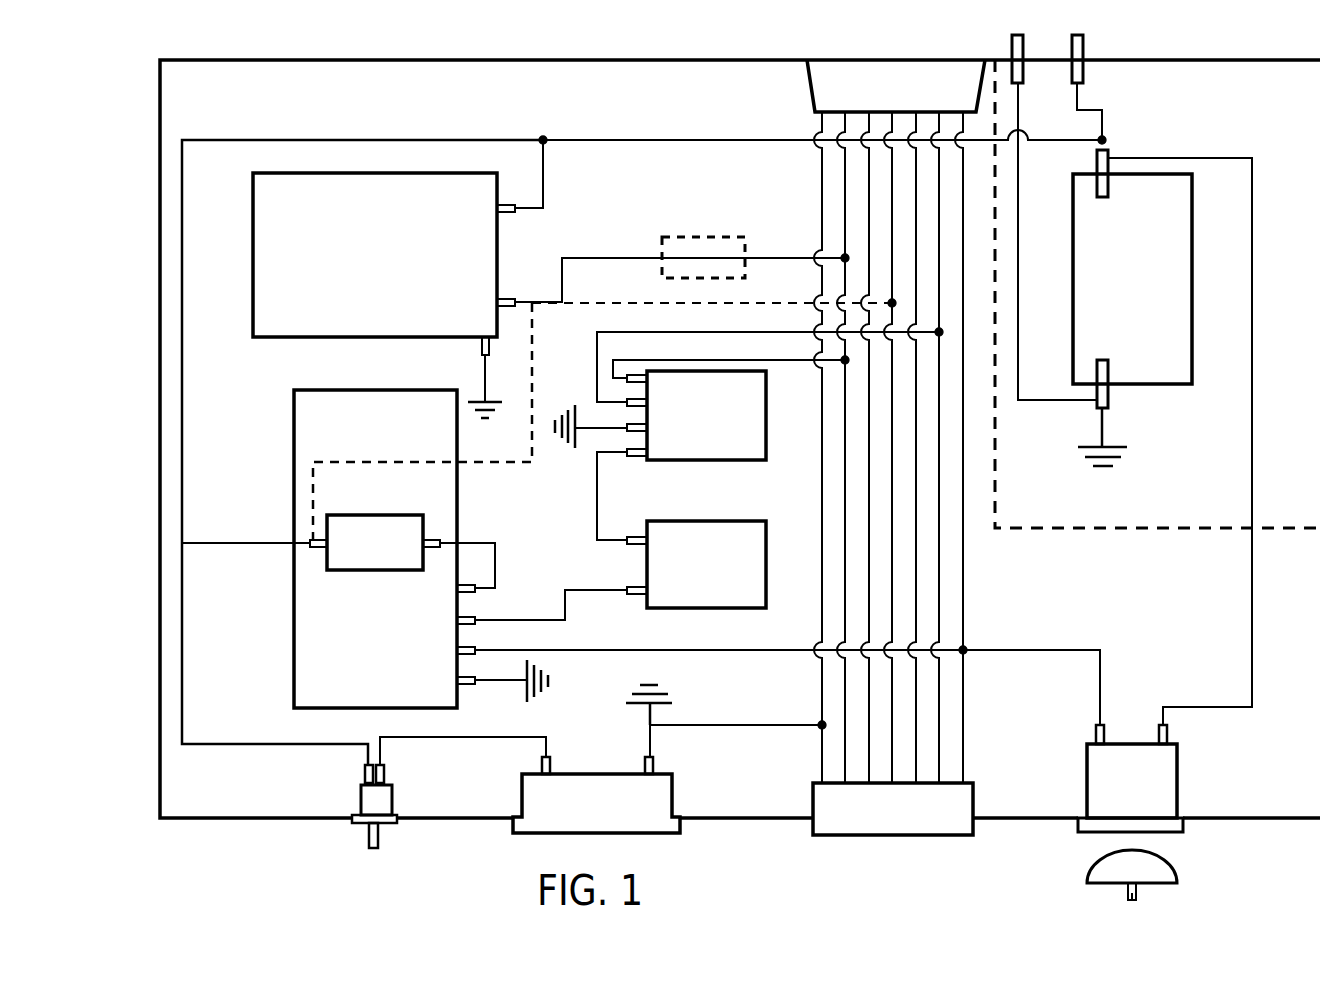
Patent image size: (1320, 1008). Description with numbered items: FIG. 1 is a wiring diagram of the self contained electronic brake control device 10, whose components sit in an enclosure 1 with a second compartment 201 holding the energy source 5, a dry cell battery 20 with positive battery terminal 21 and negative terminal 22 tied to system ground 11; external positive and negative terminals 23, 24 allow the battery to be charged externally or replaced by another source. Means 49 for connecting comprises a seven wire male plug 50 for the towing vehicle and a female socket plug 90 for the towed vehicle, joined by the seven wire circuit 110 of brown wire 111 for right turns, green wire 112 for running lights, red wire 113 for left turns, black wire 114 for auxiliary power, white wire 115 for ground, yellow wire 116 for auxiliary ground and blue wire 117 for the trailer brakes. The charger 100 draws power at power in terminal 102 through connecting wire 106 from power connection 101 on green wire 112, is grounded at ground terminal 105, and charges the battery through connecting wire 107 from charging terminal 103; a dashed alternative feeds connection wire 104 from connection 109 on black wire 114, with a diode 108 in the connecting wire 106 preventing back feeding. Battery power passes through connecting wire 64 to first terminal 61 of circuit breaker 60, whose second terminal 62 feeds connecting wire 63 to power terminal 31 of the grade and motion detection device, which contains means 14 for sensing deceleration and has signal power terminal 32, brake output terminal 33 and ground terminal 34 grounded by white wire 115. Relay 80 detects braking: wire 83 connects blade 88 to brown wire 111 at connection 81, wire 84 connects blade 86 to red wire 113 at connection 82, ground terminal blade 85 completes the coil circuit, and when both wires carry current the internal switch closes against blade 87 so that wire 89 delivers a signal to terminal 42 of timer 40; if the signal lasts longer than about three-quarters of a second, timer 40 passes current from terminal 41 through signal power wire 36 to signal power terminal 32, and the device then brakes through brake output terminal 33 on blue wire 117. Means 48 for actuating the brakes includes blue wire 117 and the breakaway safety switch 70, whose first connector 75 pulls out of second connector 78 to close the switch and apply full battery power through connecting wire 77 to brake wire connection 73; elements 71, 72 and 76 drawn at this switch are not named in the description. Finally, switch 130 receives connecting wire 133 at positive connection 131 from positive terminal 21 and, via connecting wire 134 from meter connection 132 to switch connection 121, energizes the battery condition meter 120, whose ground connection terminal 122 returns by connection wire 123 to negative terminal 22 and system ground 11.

The enclosure 1 is at (220, 115).
The energy source 5 is at (1157, 392).
The electronic brake control device 10 is at (740, 487).
The system ground 11 is at (554, 428).
The means for sensing deceleration 14 is at (248, 695).
The battery 20 is at (1151, 300).
The positive battery terminal 21 is at (1110, 187).
The negative terminal 22 is at (1110, 395).
The external positive terminal 23 is at (1085, 42).
The external negative terminal 24 is at (1012, 44).
The power terminal 31 is at (476, 592).
The signal power terminal 32 is at (455, 623).
The brake output terminal 33 is at (455, 655).
The ground terminal 34 is at (470, 686).
The signal power wire 36 is at (558, 616).
The timer 40 is at (722, 580).
The terminal 41 is at (628, 597).
The terminal 42 is at (627, 545).
The means for actuating the brakes 48 is at (367, 563).
The means for connecting 49 is at (847, 485).
The seven wire male plug 50 is at (905, 812).
The circuit breaker 60 is at (388, 562).
The first terminal 61 is at (318, 549).
The second terminal 62 is at (432, 549).
The connecting wire 63 is at (495, 544).
The connecting wire 64 is at (256, 540).
The breakaway safety switch 70 is at (1135, 792).
The terminal 71 is at (1170, 731).
The terminal 72 is at (1104, 730).
The brake wire connection 73 is at (966, 652).
The first connector 75 is at (1165, 870).
The wire 76 is at (1075, 652).
The connecting wire 77 is at (1252, 640).
The second connector 78 is at (1162, 800).
The relay 80 is at (752, 456).
The connection 81 is at (941, 332).
The connection 82 is at (843, 362).
The wire 83 is at (597, 348).
The wire 84 is at (732, 358).
The ground terminal blade 85 is at (625, 431).
The blade 86 is at (627, 388).
The blade 87 is at (630, 458).
The blade 88 is at (640, 413).
The wire 89 is at (597, 526).
The female socket plug 90 is at (912, 104).
The charger 100 is at (348, 250).
The power connection 101 is at (843, 256).
The power in terminal 102 is at (513, 298).
The charging terminal 103 is at (518, 213).
The connection wire 104 is at (633, 302).
The ground terminal 105 is at (480, 345).
The connecting wire 106 is at (637, 256).
The connecting wire 107 is at (543, 176).
The diode 108 is at (722, 236).
The connection 109 is at (894, 302).
The seven wire circuit 110 is at (893, 428).
The brown wire 111 is at (941, 595).
The green wire 112 is at (867, 590).
The red wire 113 is at (845, 483).
The black wire 114 is at (894, 539).
The white wire 115 is at (820, 462).
The yellow wire 116 is at (918, 617).
The blue wire 117 is at (965, 576).
The battery condition meter 120 is at (614, 822).
The switch connection 121 is at (551, 767).
The ground connection terminal 122 is at (655, 766).
The connection wire 123 is at (647, 737).
The switch 130 is at (378, 818).
The positive connection 131 is at (363, 768).
The meter connection 132 is at (385, 772).
The connecting wire 133 is at (182, 712).
The connecting wire 134 is at (500, 738).
The second compartment 201 is at (1210, 432).